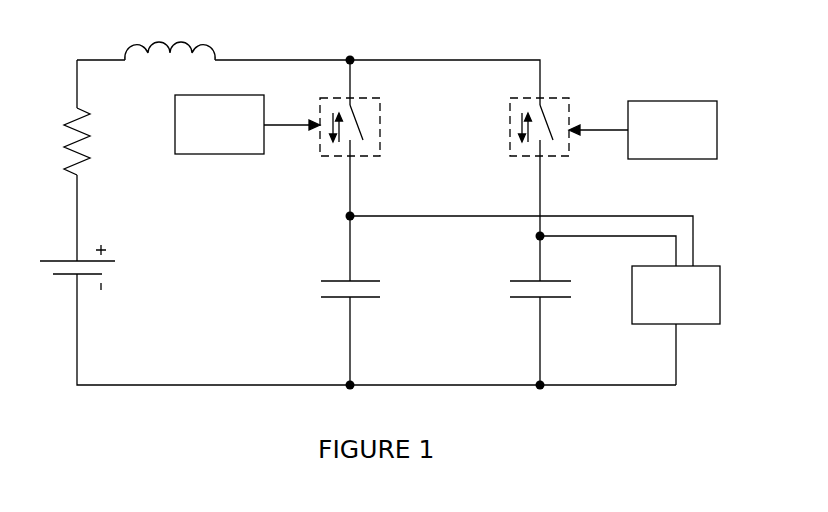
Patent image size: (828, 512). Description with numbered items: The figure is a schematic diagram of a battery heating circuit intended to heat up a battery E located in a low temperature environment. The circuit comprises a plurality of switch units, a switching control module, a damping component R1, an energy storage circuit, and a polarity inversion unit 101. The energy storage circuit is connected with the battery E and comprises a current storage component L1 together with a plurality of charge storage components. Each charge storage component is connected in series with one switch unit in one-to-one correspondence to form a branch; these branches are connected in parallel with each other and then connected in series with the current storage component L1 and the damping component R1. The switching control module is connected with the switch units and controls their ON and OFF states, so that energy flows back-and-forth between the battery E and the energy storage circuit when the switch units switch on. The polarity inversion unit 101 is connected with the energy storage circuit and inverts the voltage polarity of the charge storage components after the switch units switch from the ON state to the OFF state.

The polarity inversion unit 101 is at (676, 295).
The current storage component L1 is at (170, 68).
The damping component R1 is at (101, 141).
The battery E is at (88, 267).